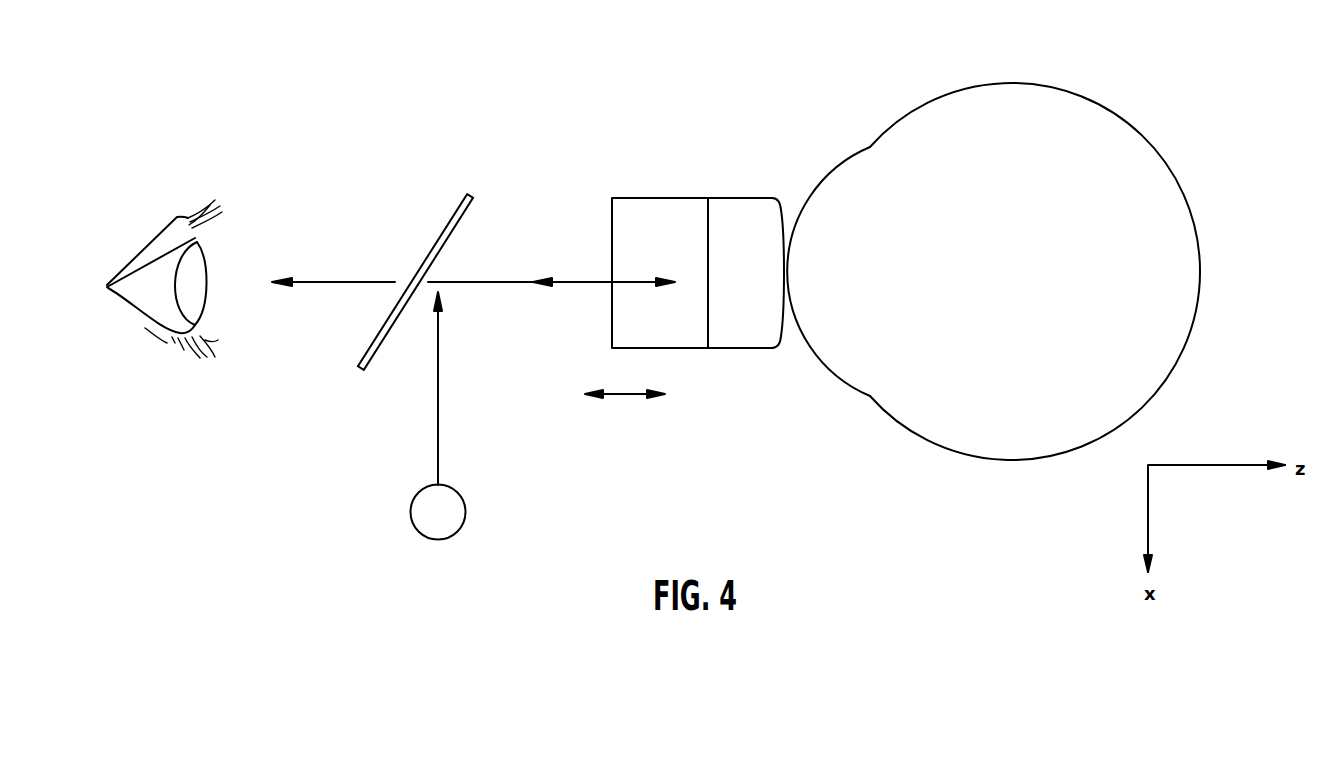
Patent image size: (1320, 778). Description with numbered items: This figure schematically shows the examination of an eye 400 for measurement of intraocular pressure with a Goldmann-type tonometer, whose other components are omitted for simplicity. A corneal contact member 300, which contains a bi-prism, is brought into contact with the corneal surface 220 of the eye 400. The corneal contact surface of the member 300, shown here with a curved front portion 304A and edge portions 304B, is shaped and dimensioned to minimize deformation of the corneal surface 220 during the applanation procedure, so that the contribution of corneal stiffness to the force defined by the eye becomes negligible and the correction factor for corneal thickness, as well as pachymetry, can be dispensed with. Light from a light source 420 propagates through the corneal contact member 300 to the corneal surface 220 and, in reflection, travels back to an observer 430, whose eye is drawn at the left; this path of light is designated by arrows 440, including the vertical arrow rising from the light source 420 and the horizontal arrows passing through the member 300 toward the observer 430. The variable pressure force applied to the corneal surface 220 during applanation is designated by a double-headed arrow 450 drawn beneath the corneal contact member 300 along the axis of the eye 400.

The corneal surface 220 is at (825, 367).
The corneal contact member 300 is at (723, 230).
The front surface of optical element 304A is at (780, 285).
The edge of optical element 304B is at (786, 198).
The eye 400 is at (1115, 160).
The light source 420 is at (438, 540).
The observer 430 is at (145, 292).
The arrows 440 is at (327, 282).
The arrow 450 is at (623, 395).